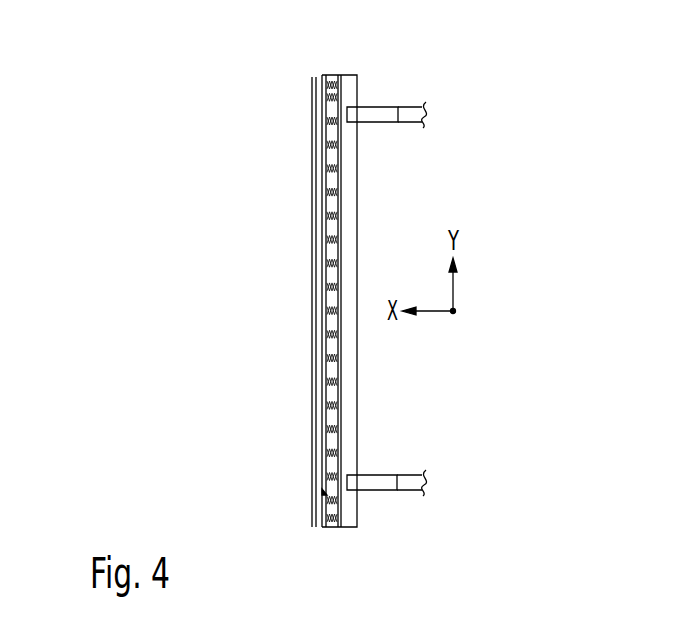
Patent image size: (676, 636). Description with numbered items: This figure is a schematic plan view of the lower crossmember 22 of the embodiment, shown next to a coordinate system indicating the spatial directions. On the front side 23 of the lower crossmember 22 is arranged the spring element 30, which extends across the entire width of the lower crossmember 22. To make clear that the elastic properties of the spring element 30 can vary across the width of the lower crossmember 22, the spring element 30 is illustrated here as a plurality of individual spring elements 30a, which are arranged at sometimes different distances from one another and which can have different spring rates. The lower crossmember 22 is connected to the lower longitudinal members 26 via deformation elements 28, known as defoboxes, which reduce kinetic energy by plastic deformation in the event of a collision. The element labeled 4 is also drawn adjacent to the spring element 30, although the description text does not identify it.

The panel 4 is at (312, 265).
The lower crossmember 22 is at (347, 380).
The front side 23 is at (329, 492).
The lower longitudinal members 26 is at (411, 107).
The deformation elements 28 is at (376, 107).
The spring element 30 is at (331, 79).
The individual spring elements 30a is at (326, 338).